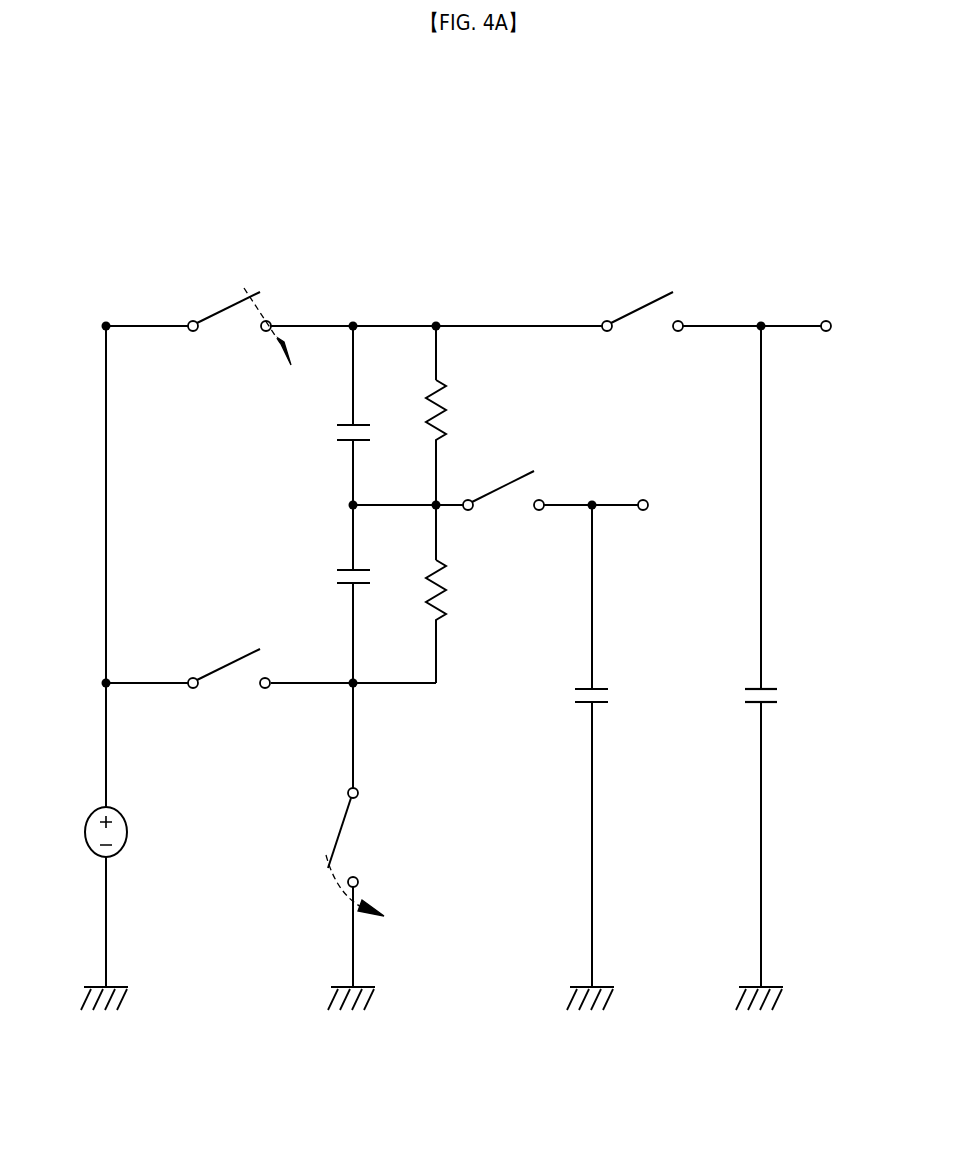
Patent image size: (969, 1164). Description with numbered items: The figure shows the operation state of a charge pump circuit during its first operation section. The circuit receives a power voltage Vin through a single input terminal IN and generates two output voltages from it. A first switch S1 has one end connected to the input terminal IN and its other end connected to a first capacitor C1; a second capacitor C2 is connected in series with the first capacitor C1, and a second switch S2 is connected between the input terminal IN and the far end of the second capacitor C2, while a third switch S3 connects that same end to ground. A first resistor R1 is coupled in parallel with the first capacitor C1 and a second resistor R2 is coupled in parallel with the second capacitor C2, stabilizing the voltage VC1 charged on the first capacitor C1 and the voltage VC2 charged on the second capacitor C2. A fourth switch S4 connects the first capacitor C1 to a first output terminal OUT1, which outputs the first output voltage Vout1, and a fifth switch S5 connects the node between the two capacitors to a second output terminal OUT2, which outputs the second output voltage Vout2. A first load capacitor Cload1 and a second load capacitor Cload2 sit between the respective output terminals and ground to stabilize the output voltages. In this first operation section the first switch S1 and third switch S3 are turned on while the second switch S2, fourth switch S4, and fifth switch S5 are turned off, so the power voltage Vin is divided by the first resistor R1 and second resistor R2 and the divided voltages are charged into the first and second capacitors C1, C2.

The first switch S1 is at (239, 308).
The second switch S2 is at (231, 649).
The third switch S3 is at (323, 852).
The fourth switch S4 is at (641, 291).
The fifth switch S5 is at (511, 474).
The first capacitor C1 is at (371, 431).
The second capacitor C2 is at (371, 580).
The first resistor R1 is at (451, 414).
The second resistor R2 is at (452, 593).
The voltage charged at the first capacitor VC1 is at (297, 350).
The voltage charged at the second capacitor VC2 is at (297, 525).
The power voltage Vin is at (84, 832).
The input terminal IN is at (98, 683).
The first output terminal OUT1 is at (860, 326).
The second output terminal OUT2 is at (675, 504).
The first load capacitor Cload1 is at (798, 698).
The second load capacitor Cload2 is at (628, 698).
The first output voltage Vout1 is at (893, 372).
The second output voltage Vout2 is at (710, 552).